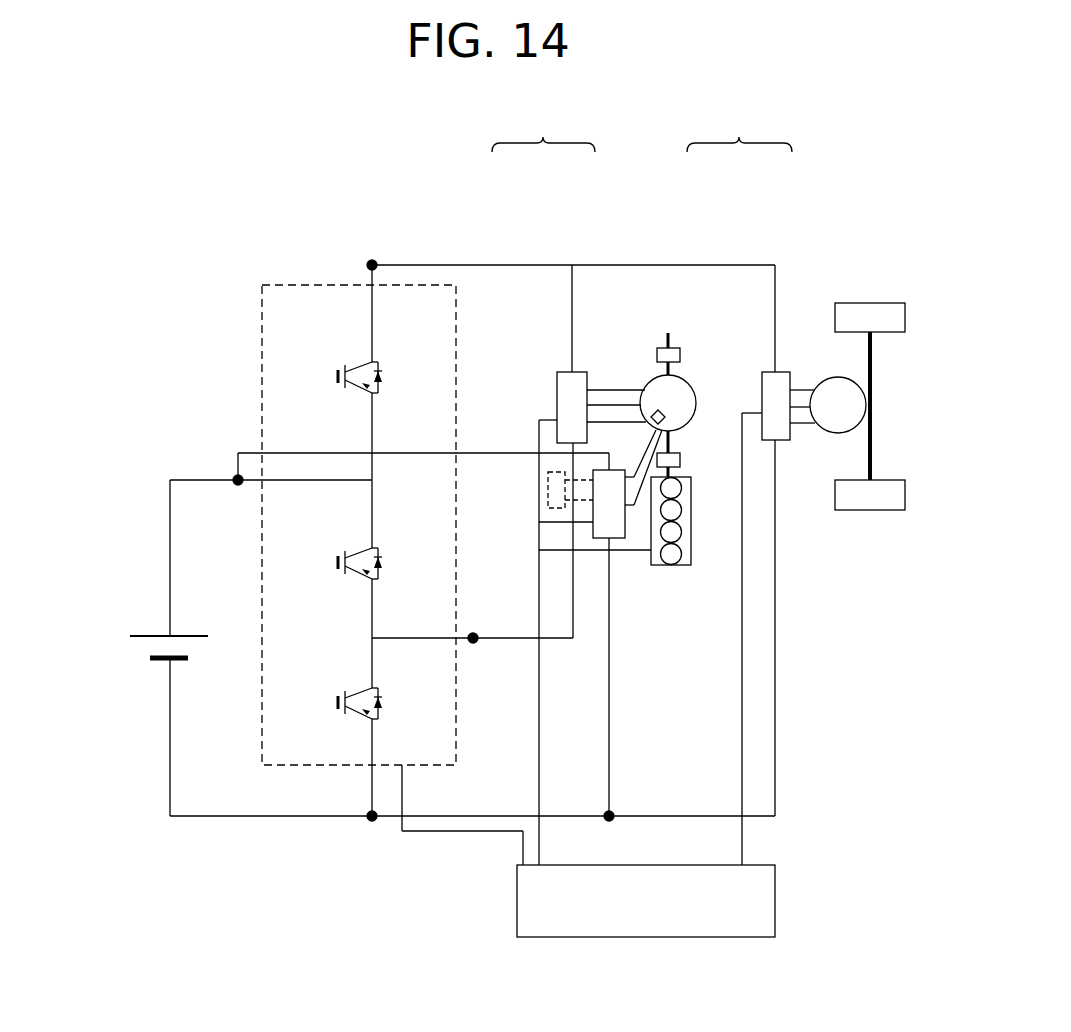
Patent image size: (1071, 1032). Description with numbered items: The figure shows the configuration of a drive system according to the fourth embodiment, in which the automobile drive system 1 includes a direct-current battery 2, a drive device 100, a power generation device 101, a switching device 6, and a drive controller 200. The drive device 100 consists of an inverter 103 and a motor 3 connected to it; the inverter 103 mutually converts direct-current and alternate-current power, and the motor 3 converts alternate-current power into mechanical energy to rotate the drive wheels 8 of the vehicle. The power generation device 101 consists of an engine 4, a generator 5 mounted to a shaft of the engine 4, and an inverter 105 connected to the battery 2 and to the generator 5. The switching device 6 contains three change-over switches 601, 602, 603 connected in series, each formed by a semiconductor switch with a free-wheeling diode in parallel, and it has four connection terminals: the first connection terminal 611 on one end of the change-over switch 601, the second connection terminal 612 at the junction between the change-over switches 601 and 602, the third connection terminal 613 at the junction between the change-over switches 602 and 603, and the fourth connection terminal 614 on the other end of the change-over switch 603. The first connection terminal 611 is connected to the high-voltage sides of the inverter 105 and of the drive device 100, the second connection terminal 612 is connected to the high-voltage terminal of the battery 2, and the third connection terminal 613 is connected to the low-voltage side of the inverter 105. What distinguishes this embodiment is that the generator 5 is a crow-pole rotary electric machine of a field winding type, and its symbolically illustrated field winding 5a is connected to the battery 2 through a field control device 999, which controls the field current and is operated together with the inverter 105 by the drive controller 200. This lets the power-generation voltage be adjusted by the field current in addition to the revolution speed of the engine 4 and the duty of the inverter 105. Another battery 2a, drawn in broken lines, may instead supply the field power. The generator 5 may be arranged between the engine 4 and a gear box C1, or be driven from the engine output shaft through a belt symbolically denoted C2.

The automobile drive system 1 is at (40, 140).
The direct-current battery 2 is at (148, 632).
The another battery 2a is at (548, 476).
The motor 3 is at (823, 380).
The engine 4 is at (691, 530).
The generator 5 is at (635, 380).
The field winding 5a is at (666, 419).
The switching device 6 is at (325, 283).
The drive wheels 8 is at (872, 420).
The drive device 100 is at (739, 133).
The power generation device 101 is at (543, 133).
The inverter 103 is at (764, 370).
The inverter 105 is at (561, 370).
The drive controller 200 is at (776, 918).
The change-over switch 601 is at (338, 355).
The change-over switch 602 is at (345, 587).
The change-over switch 603 is at (345, 722).
The first connection terminal 611 is at (372, 262).
The second connection terminal 612 is at (238, 476).
The third connection terminal 613 is at (474, 644).
The fourth connection terminal 614 is at (375, 822).
The field control device 999 is at (613, 540).
The gear box C1 is at (682, 357).
The belt C2 is at (683, 460).